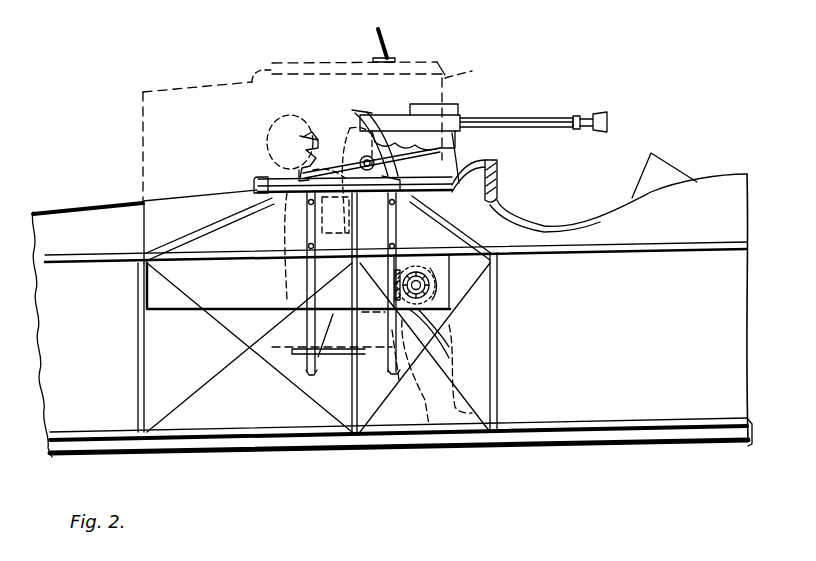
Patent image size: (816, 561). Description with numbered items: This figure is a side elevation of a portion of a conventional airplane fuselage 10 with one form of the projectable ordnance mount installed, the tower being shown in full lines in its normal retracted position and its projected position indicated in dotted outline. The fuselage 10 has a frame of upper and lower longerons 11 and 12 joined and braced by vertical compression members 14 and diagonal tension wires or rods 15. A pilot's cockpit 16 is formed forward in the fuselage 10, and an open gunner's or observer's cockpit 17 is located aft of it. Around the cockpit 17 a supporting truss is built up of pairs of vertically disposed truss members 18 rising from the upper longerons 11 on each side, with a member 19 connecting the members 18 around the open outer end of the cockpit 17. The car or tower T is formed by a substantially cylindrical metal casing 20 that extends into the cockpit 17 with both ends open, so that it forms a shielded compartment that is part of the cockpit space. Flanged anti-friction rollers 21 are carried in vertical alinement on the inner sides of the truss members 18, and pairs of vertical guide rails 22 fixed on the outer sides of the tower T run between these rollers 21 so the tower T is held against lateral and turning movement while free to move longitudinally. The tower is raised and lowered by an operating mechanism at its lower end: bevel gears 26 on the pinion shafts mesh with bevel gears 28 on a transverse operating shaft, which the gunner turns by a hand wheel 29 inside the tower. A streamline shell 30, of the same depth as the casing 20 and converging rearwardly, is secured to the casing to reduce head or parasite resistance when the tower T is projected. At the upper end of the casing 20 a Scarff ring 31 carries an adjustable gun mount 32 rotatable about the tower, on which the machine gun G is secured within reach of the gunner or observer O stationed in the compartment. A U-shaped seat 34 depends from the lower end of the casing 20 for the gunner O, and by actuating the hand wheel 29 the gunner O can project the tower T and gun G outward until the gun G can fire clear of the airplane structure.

The airplane fuselage 10 is at (445, 447).
The upper longerons 11 is at (550, 248).
The lower longerons 12 is at (522, 427).
The compression members 14 is at (145, 356).
The tension wires or rods 15 is at (270, 375).
The pilot's cockpit 16 is at (545, 226).
The gunner's cockpit 17 is at (379, 291).
The truss members 18 is at (221, 222).
The connecting member 19 is at (453, 193).
The casing 20 is at (442, 296).
The flanged anti-friction rollers 21 is at (312, 242).
The guide rails 22 is at (307, 385).
The bevel gears 26 is at (439, 350).
The bevel gears 28 is at (435, 330).
The hand wheel 29 is at (442, 313).
The streamline shell 30 is at (160, 229).
The Scarff ring 31 is at (472, 162).
The adjustable gun mount 32 is at (383, 44).
The seat 34 is at (335, 339).
The gunner or observer O is at (266, 143).
The car or tower T is at (318, 128).
The machine gun G is at (461, 121).